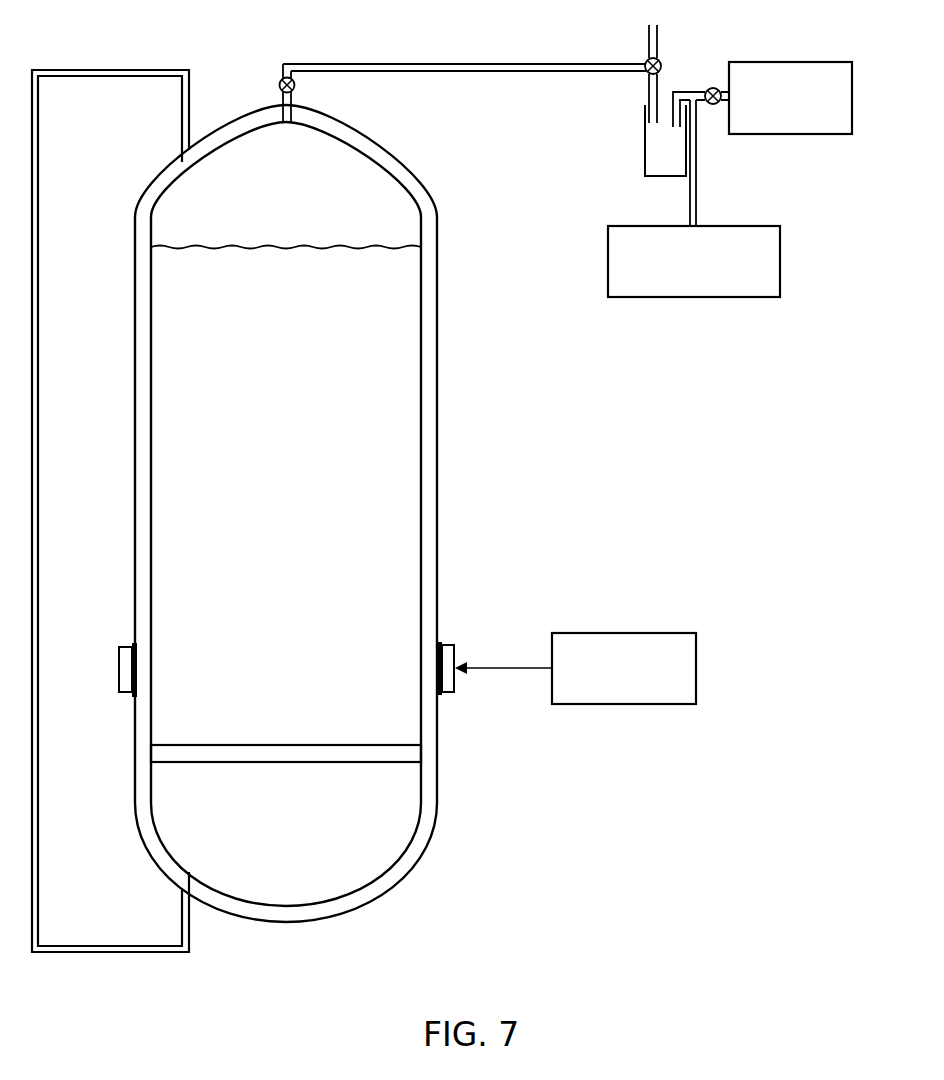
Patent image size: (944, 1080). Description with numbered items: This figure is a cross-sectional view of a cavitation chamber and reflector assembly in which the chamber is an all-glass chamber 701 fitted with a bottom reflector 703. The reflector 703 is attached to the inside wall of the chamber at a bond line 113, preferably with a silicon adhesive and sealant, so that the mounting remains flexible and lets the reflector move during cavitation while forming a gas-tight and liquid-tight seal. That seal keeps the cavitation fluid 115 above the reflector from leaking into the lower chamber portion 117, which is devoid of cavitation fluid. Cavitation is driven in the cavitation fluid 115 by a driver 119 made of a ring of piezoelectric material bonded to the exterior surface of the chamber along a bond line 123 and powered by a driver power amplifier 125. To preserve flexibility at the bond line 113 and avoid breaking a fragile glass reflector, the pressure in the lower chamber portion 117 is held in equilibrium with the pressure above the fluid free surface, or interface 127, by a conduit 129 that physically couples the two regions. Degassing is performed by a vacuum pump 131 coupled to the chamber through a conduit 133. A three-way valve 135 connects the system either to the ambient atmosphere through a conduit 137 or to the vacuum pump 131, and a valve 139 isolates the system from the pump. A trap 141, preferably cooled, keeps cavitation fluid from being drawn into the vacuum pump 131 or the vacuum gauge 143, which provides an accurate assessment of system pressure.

The bond line 113 is at (152, 763).
The cavitation fluid 115 is at (305, 528).
The lower chamber portion 117 is at (300, 849).
The driver 119 is at (446, 660).
The bond line 123 is at (440, 643).
The driver power amplifier 125 is at (623, 705).
The interface 127 is at (232, 247).
The conduit 129 is at (120, 70).
The vacuum pump 131 is at (785, 62).
The conduit 133 is at (279, 103).
The three-way valve 135 is at (647, 60).
The conduit 137 is at (659, 42).
The valve 139 is at (712, 106).
The trap 141 is at (645, 135).
The vacuum gauge 143 is at (782, 260).
The all-glass chamber 701 is at (588, 511).
The bottom reflector 703 is at (265, 755).